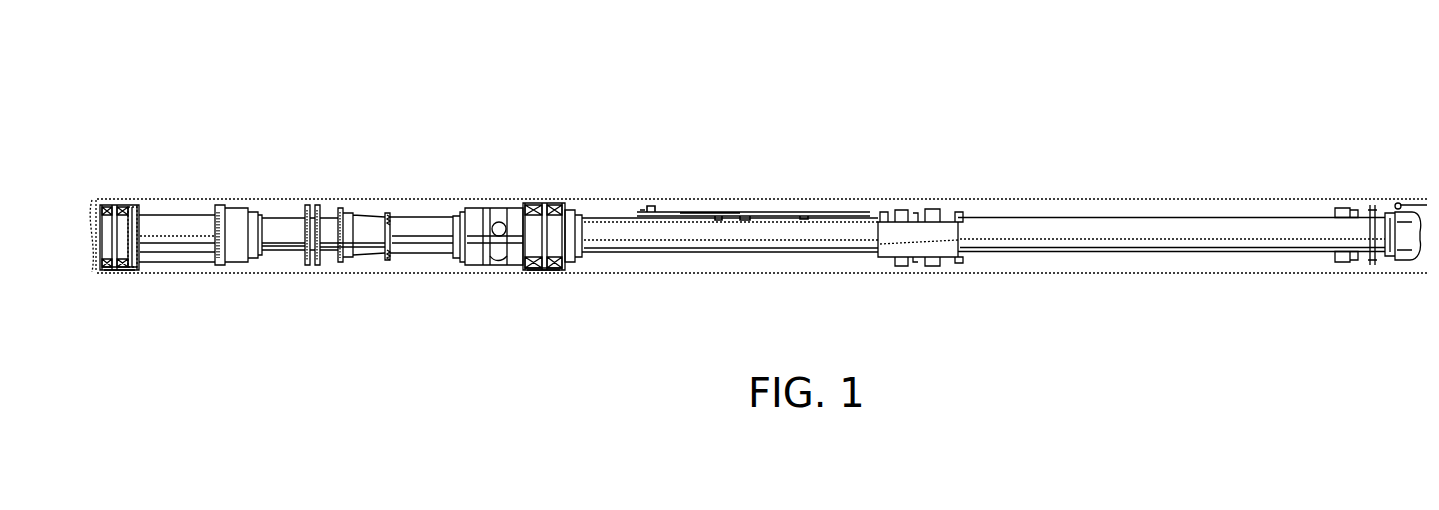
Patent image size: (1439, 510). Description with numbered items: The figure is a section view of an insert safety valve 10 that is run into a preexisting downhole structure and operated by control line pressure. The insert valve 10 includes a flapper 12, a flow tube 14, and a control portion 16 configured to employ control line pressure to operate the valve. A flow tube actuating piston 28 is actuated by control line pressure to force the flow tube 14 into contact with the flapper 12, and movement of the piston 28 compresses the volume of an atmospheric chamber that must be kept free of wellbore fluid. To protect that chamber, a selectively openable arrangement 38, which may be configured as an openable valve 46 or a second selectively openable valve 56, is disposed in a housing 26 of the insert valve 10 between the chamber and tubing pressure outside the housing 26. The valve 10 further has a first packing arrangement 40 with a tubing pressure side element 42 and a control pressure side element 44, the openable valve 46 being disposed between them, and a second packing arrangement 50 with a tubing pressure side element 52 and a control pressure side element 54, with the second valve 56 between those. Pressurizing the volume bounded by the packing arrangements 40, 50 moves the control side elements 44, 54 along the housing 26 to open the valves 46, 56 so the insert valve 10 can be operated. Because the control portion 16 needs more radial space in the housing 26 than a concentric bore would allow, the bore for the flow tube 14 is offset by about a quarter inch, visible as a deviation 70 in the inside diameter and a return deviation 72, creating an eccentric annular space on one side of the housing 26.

The insert safety valve 10 is at (812, 126).
The flapper 12 is at (1393, 240).
The flow tube 14 is at (1050, 220).
The control portion 16 is at (331, 248).
The housing 26 is at (237, 205).
The flow tube actuating piston 28 is at (685, 212).
The selectively openable arrangement 38 is at (123, 206).
The first packing arrangement 40 is at (125, 182).
The tubing pressure side element 42 is at (104, 202).
The control pressure side element 44 is at (133, 203).
The openable valve 46 is at (116, 272).
The second packing arrangement 50 is at (557, 221).
The tubing pressure side element 52 is at (566, 203).
The control pressure side element 54 is at (530, 204).
The second selectively openable valve 56 is at (545, 272).
The deviation 70 is at (415, 210).
The deviation 72 is at (917, 210).